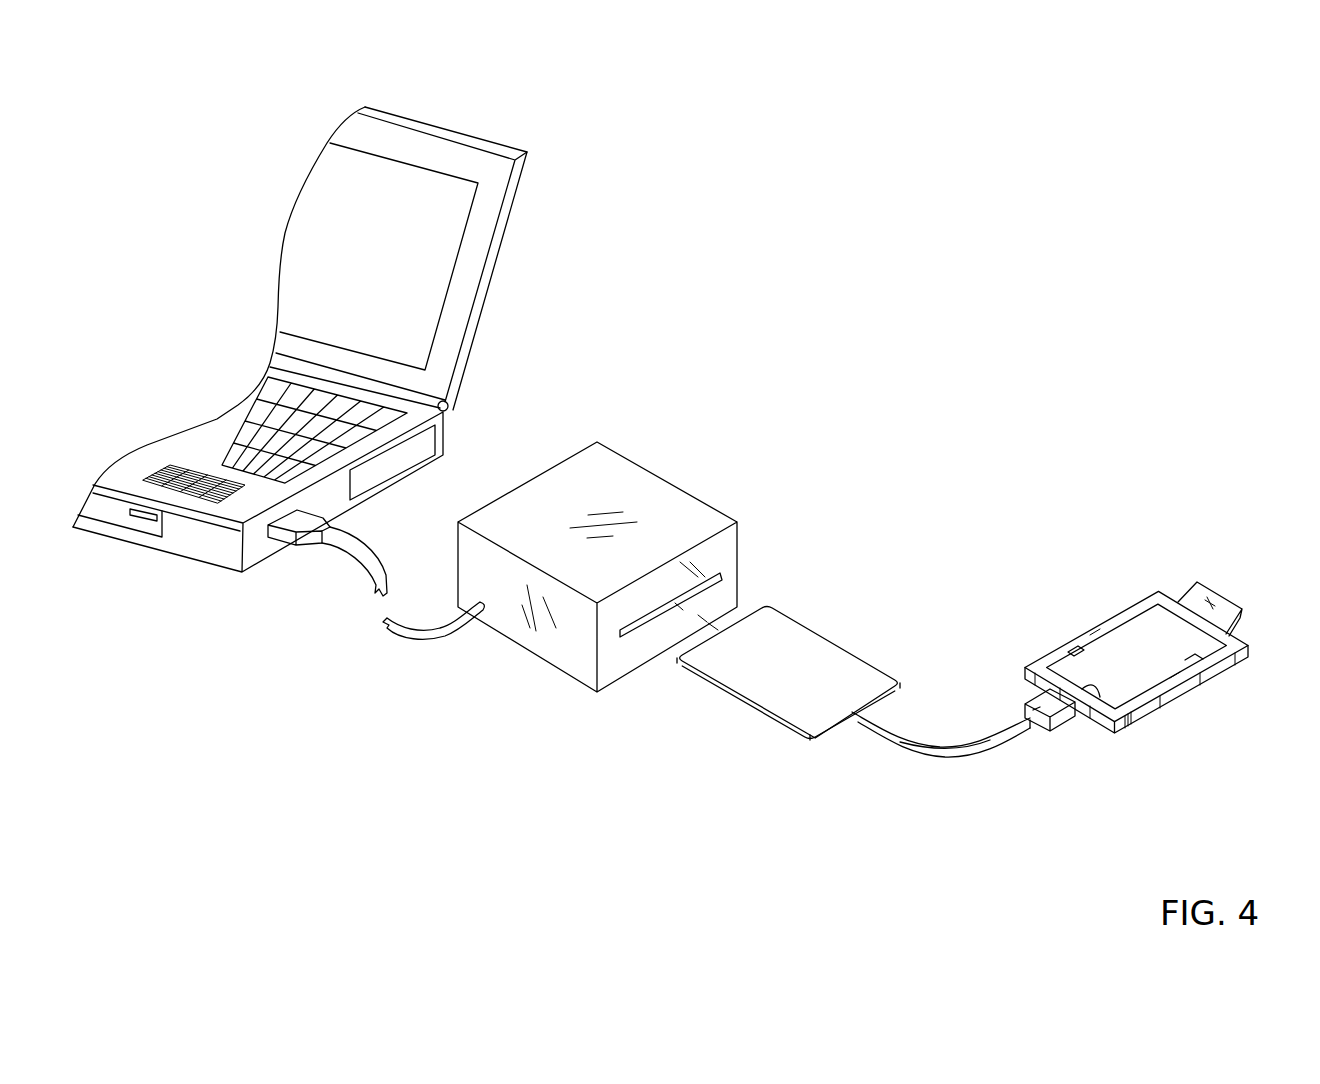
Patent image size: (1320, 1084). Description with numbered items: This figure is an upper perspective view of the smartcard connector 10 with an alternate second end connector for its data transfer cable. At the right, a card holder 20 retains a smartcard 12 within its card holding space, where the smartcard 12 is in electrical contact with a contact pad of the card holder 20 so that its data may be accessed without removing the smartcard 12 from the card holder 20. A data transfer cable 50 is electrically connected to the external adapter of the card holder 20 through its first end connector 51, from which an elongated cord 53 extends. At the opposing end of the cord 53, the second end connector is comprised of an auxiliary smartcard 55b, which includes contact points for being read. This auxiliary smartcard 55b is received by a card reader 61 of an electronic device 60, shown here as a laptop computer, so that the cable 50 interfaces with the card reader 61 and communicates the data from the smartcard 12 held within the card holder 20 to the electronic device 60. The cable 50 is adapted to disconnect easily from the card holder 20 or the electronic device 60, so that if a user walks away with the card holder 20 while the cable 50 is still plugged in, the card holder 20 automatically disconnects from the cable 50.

The smartcard connector 10 is at (1007, 543).
The smartcard 12 is at (1147, 620).
The card holder 20 is at (1155, 722).
The data transfer cable 50 is at (952, 772).
The first end connector 51 is at (1062, 732).
The elongated cord 53 is at (903, 750).
The auxiliary smartcard second end connector 55b is at (803, 625).
The electronic device 60 is at (505, 142).
The card reader 61 is at (688, 490).